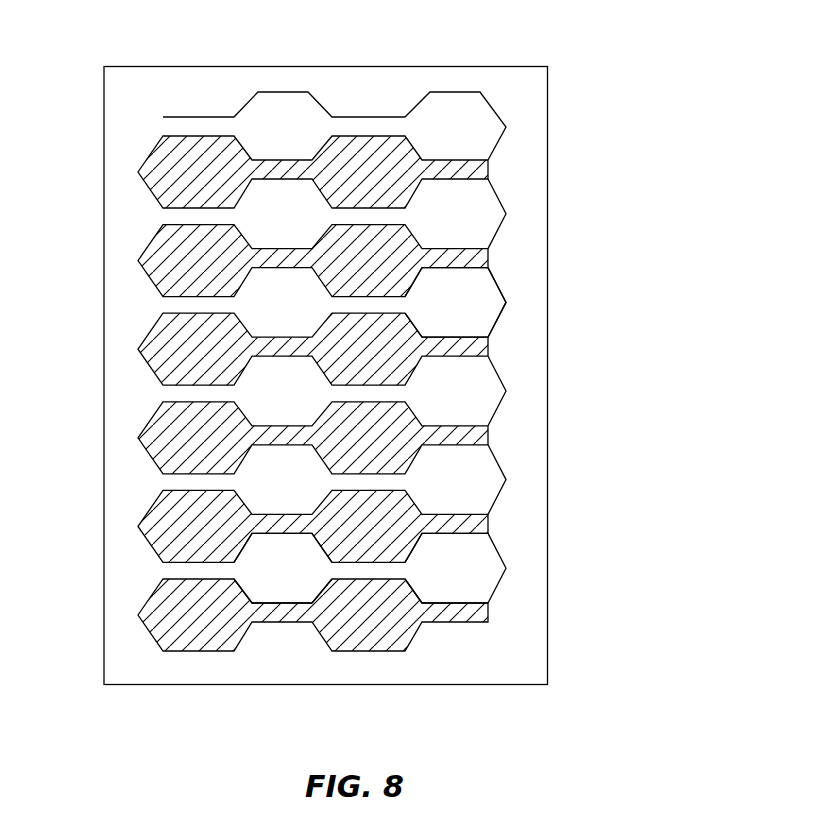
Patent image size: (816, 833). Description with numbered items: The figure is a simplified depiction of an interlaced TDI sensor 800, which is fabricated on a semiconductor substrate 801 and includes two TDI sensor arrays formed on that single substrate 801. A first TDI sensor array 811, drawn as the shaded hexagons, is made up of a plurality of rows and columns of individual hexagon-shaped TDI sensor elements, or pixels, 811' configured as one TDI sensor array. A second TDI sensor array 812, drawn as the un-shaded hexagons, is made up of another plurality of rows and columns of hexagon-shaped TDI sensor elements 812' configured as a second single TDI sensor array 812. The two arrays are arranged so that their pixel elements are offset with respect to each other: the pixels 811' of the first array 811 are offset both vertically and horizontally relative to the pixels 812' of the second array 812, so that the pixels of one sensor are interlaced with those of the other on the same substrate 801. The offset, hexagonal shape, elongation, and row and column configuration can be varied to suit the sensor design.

The interlaced TDI sensor 800 is at (648, 136).
The semiconductor substrate 801 is at (547, 555).
The first TDI sensor array 811 is at (313, 105).
The hexagon-shaped TDI sensor elements 811' is at (252, 261).
The second TDI sensor array 812 is at (361, 639).
The hexagon-shaped TDI sensor elements 812' is at (517, 302).